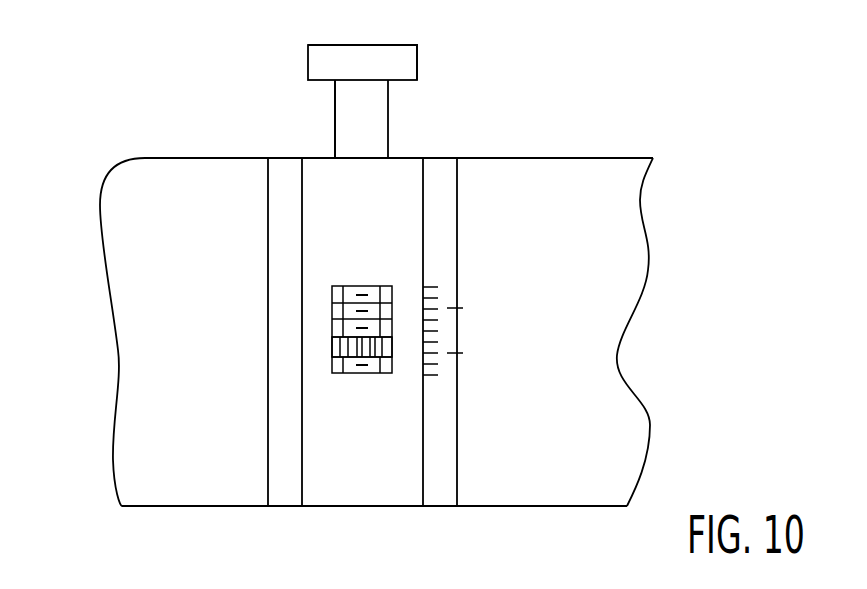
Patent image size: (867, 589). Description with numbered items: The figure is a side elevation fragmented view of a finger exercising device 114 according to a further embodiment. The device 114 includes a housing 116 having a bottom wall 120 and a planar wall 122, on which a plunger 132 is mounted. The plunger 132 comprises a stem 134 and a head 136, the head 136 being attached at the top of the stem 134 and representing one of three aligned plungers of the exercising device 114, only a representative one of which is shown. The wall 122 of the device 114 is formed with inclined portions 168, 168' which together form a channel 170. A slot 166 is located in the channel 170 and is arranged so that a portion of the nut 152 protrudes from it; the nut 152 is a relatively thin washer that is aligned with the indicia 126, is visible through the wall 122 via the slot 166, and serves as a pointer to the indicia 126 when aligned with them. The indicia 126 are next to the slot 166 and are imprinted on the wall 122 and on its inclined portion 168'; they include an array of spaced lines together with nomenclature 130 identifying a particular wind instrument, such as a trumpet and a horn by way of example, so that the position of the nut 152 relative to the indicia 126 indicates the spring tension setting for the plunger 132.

The finger exercising device 114 is at (579, 119).
The housing 116 is at (145, 157).
The bottom wall 120 is at (175, 507).
The front wall 122 is at (624, 207).
The indicia 126 is at (511, 287).
The nomenclature 130 is at (497, 353).
The plunger 132 is at (419, 115).
The stem 134 is at (335, 115).
The head 136 is at (308, 60).
The nut 152 is at (343, 353).
The slot 166 is at (388, 286).
The inclined portion 168 is at (169, 332).
The inclined portion 168' is at (588, 332).
The channel 170 is at (378, 494).